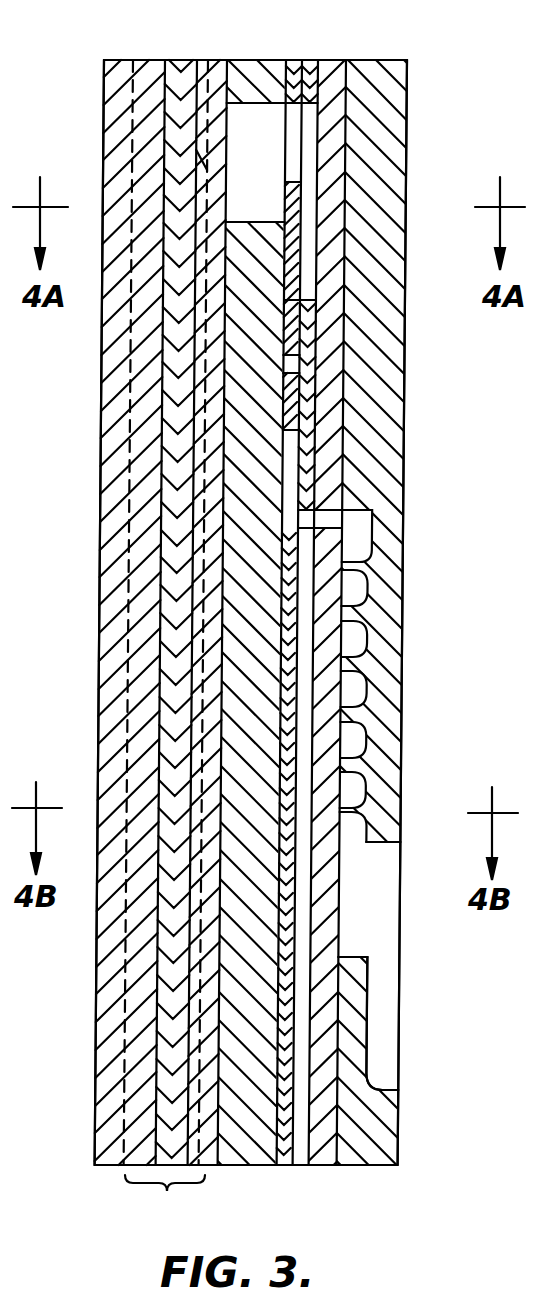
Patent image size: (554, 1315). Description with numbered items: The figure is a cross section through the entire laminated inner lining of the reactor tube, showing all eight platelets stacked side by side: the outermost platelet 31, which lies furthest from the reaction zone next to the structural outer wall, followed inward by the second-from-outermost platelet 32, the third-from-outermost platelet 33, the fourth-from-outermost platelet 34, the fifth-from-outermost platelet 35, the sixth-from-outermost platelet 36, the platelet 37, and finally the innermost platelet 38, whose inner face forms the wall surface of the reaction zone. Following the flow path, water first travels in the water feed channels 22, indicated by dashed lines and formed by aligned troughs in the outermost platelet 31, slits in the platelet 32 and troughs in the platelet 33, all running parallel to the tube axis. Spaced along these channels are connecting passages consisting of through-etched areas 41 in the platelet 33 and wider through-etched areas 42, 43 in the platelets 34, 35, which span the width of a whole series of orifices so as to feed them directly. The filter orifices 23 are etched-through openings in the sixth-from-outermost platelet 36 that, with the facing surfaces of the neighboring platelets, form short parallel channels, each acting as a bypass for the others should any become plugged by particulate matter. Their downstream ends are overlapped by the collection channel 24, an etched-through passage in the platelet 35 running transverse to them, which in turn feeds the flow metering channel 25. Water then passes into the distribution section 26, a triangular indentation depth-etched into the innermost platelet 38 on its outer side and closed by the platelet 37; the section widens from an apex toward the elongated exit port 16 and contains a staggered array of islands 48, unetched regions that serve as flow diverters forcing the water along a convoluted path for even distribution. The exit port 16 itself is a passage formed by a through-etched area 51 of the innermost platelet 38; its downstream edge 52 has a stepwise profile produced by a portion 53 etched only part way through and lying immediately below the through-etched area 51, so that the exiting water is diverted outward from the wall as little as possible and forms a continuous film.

The outermost platelet 31 is at (115, 60).
The second-from-outermost platelet 32 is at (182, 60).
The third-from-outermost platelet 33 is at (218, 60).
The fourth-from-outermost platelet 34 is at (250, 60).
The fifth-from-outermost platelet 35 is at (297, 60).
The sixth-from-outermost platelet 36 is at (310, 60).
The platelet adjacent to innermost platelet 37 is at (337, 60).
The innermost platelet 38 is at (390, 60).
The through-etched areas 41 is at (207, 162).
The wider through-etched area 42 is at (263, 150).
The wider through-etched area 43 is at (293, 168).
The filter orifices 23 is at (308, 250).
The collection channel 24 is at (290, 300).
The flow metering channel 25 is at (290, 373).
The distribution section 26 is at (350, 545).
The islands 48 is at (352, 618).
The exit ports 16 is at (417, 842).
The through-etched area 51 is at (353, 910).
The downstream edge 52 is at (367, 957).
The partially etched portion 53 is at (355, 1037).
The water feed channels 22 is at (167, 1192).